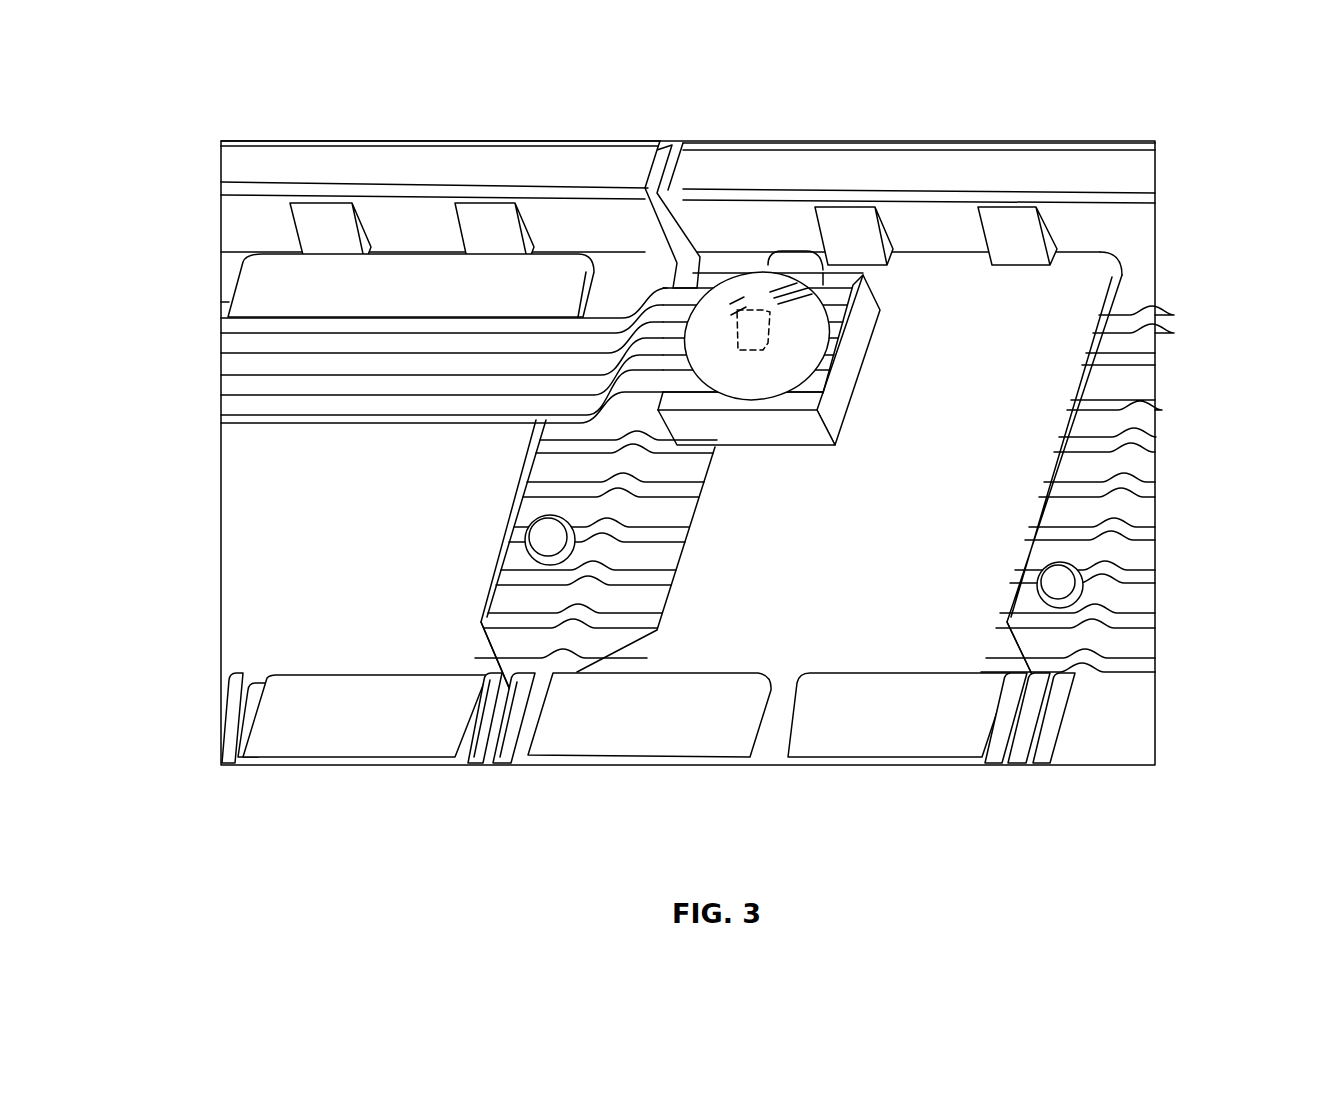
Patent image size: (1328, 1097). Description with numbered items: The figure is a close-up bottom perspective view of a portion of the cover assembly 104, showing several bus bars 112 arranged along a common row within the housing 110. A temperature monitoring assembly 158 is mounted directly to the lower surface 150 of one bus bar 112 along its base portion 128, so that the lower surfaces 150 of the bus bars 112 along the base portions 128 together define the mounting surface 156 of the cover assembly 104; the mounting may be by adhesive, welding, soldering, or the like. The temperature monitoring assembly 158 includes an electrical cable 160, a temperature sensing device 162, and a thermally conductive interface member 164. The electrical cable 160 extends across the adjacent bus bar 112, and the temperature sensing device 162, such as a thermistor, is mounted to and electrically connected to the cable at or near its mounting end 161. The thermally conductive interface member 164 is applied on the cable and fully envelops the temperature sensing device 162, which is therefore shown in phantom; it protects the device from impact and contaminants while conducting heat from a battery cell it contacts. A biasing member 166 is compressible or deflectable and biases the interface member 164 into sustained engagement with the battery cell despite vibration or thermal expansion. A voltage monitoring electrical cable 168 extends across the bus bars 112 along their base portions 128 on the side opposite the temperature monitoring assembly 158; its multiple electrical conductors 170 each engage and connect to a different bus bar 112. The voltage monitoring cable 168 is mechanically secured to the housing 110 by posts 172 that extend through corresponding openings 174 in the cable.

The cover assembly 104 is at (1178, 112).
The housing 110 is at (993, 172).
The bus bars 112 is at (272, 285).
The base portion 128 is at (993, 425).
The lower surface 150 is at (980, 338).
The mounting surface 156 is at (926, 305).
The temperature monitoring assembly 158 is at (820, 278).
The electrical cable 160 is at (460, 333).
The mounting end 161 is at (870, 283).
The temperature sensing device 162 is at (755, 295).
The thermally conductive interface member 164 is at (723, 307).
The biasing member 166 is at (835, 402).
The voltage monitoring electrical cable 168 is at (642, 532).
The electrical conductors 170 is at (625, 560).
The posts 172 is at (543, 567).
The openings 174 is at (541, 536).